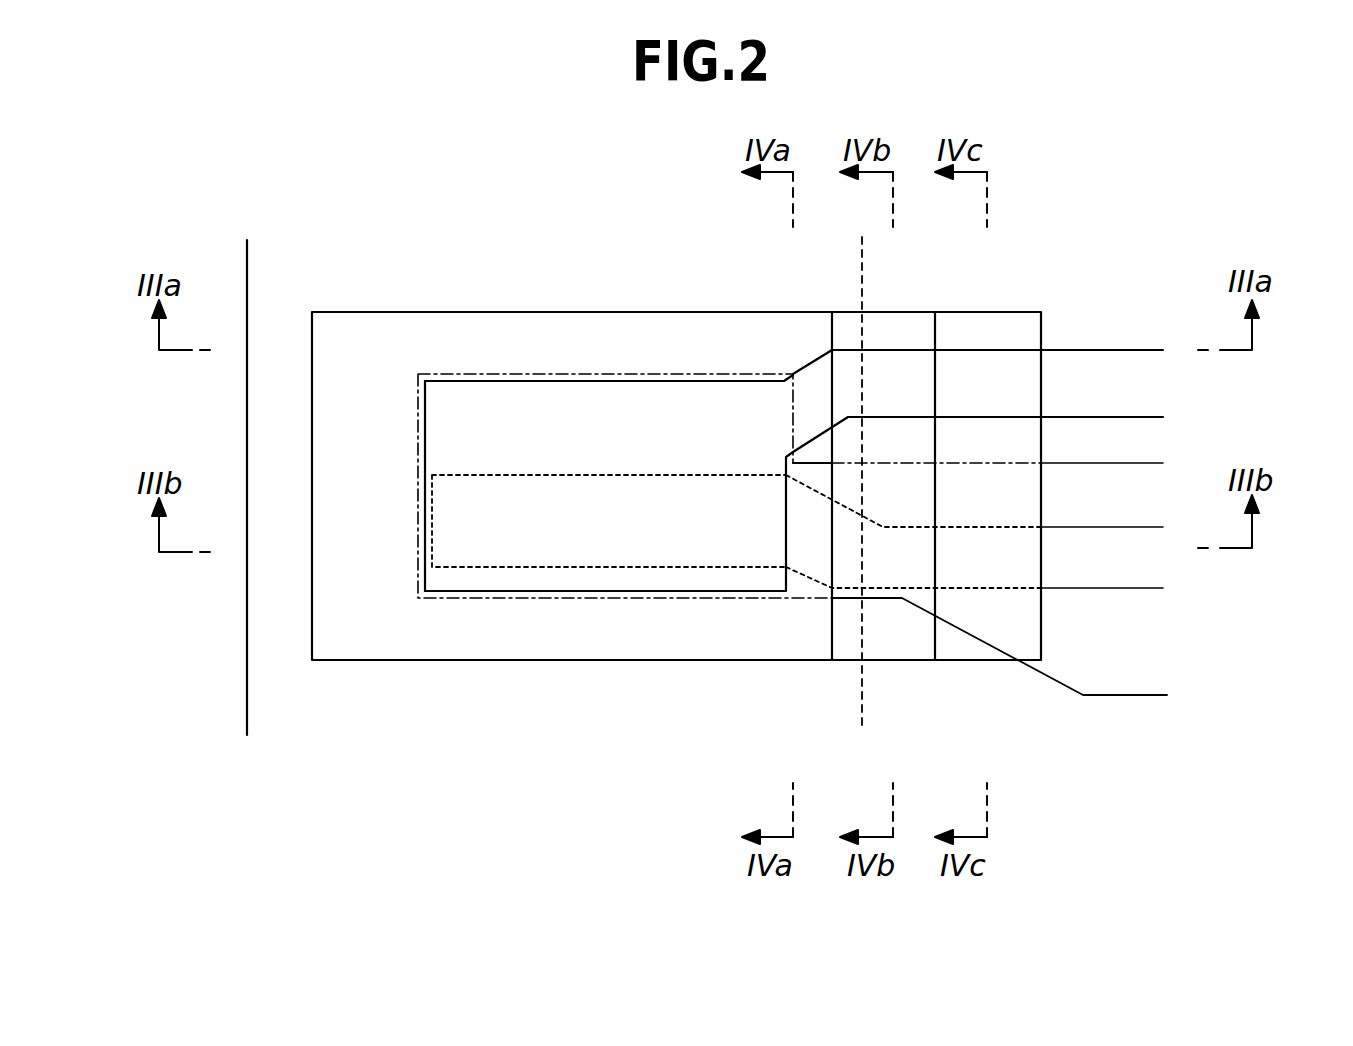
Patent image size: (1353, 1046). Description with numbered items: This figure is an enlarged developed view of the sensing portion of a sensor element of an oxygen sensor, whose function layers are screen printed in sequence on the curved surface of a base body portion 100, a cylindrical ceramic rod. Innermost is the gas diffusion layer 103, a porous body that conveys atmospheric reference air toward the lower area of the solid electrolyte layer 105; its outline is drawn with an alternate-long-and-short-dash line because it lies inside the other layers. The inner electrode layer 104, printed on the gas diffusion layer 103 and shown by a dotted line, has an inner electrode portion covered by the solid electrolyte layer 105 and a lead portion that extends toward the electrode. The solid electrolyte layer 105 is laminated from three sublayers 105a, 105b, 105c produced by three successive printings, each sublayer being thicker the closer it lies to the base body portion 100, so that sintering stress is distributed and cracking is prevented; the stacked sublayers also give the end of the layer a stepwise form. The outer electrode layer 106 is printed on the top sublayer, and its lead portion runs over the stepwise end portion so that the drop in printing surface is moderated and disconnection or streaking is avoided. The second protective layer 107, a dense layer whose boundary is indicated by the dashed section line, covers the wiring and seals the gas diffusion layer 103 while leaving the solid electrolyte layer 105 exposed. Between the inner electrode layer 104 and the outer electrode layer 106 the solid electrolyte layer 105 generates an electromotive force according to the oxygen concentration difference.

The base body portion 100 is at (266, 700).
The gas diffusion layer 103 is at (1120, 677).
The inner electrode layer 104 is at (1120, 572).
The solid electrolyte layer 105 is at (676, 568).
The first sublayer of solid electrolyte layer 105a is at (963, 650).
The second sublayer of solid electrolyte layer 105b is at (883, 645).
The third sublayer of solid electrolyte layer 105c is at (548, 645).
The outer electrode layer 106 is at (1102, 373).
The second protective layer 107 is at (880, 270).